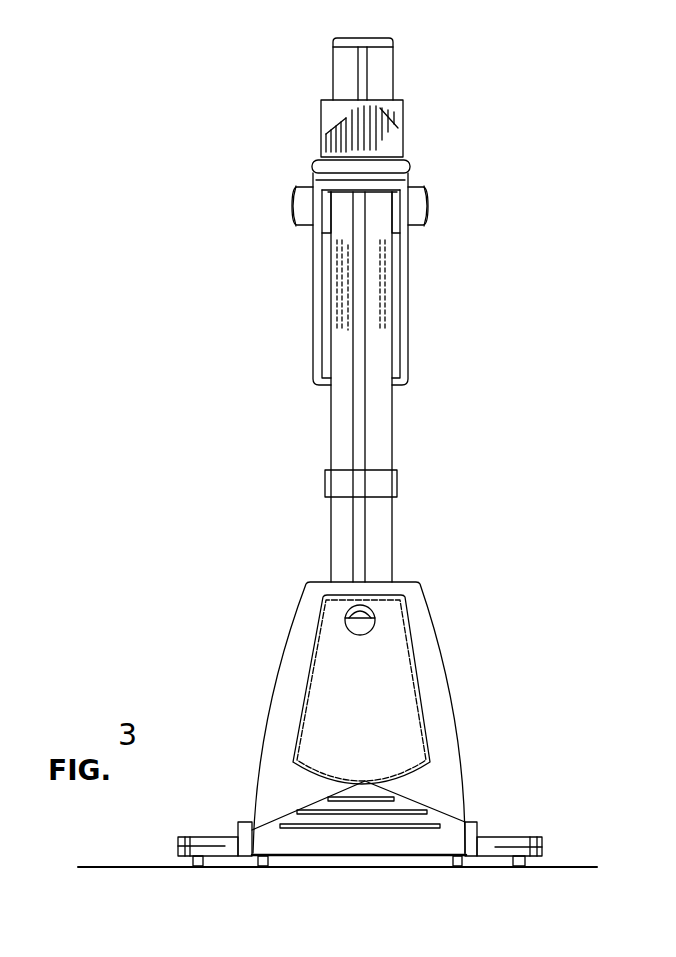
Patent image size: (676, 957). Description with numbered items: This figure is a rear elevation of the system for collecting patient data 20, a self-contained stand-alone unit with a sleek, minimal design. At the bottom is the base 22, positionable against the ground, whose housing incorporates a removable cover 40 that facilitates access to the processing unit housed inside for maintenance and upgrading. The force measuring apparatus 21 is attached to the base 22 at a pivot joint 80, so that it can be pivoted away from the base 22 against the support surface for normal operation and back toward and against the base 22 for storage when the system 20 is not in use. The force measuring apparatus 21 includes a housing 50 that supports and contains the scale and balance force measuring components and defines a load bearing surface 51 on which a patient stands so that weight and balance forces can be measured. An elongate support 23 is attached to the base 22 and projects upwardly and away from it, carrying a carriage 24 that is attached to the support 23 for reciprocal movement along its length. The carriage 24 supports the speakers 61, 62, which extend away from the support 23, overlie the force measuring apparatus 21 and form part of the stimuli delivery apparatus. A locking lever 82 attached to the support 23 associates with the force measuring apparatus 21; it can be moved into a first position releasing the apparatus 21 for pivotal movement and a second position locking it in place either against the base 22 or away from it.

The system for collecting patient data 20 is at (266, 434).
The force measuring apparatus 21 is at (545, 835).
The base 22 is at (463, 798).
The elongate support 23 is at (385, 543).
The carriage 24 is at (395, 147).
The removable cover 40 is at (285, 693).
The housing 50 is at (177, 840).
The load bearing surface 51 is at (217, 837).
The speaker 61 is at (427, 220).
The speaker 62 is at (297, 222).
The pivot joint 80 is at (365, 781).
The locking lever 82 is at (378, 483).